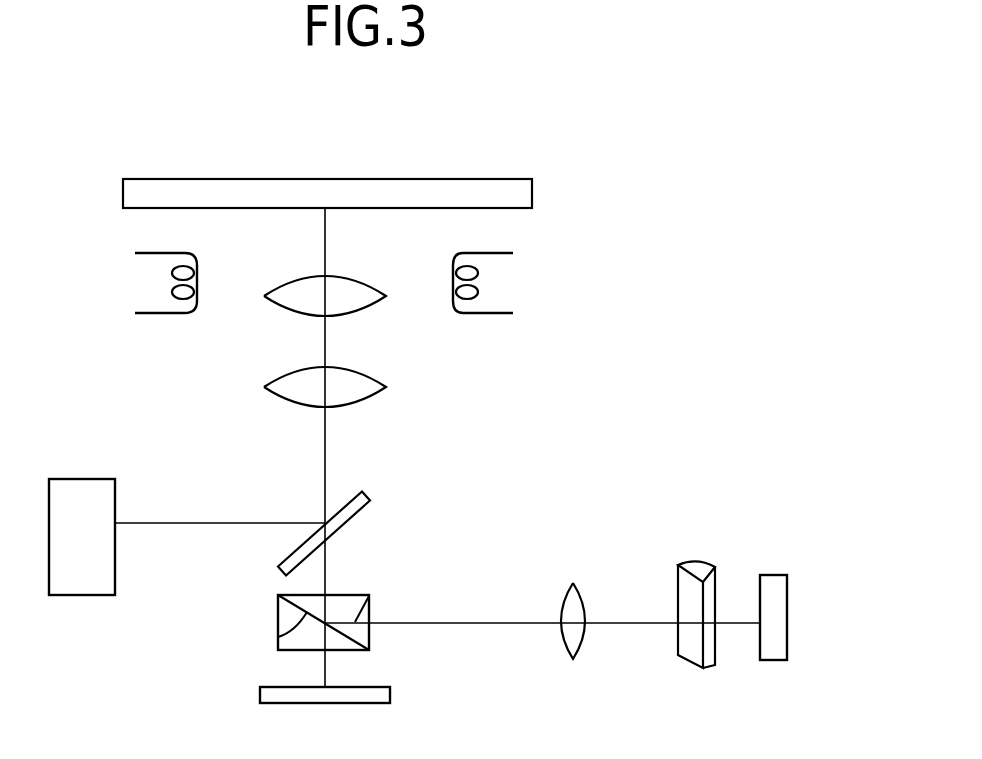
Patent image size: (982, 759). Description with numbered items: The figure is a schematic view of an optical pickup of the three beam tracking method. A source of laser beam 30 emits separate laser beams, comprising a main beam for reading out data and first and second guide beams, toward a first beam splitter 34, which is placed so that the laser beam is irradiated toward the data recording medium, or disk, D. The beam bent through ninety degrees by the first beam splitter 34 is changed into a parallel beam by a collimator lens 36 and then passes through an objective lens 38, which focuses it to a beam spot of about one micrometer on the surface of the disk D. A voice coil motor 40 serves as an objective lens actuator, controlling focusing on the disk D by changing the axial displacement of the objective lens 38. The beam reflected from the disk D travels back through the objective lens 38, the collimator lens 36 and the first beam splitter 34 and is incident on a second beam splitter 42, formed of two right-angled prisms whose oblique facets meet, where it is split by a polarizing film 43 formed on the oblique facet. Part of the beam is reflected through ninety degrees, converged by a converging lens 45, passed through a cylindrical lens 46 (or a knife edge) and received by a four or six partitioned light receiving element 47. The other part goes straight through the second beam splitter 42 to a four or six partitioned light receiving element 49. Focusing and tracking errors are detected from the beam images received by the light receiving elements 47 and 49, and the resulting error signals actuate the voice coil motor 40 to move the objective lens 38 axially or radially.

The data recording medium D is at (470, 179).
The source of laser beam 30 is at (75, 596).
The first beam splitter 34 is at (370, 497).
The collimator lens 36 is at (385, 388).
The objective lens 38 is at (378, 305).
The voice coil motor 40 is at (152, 314).
The second beam splitter 42 is at (369, 595).
The polarizing film 43 is at (278, 637).
The converging lens 45 is at (582, 598).
The cylindrical lens 46 is at (716, 568).
The light receiving element 47 is at (780, 575).
The light receiving element 49 is at (370, 704).